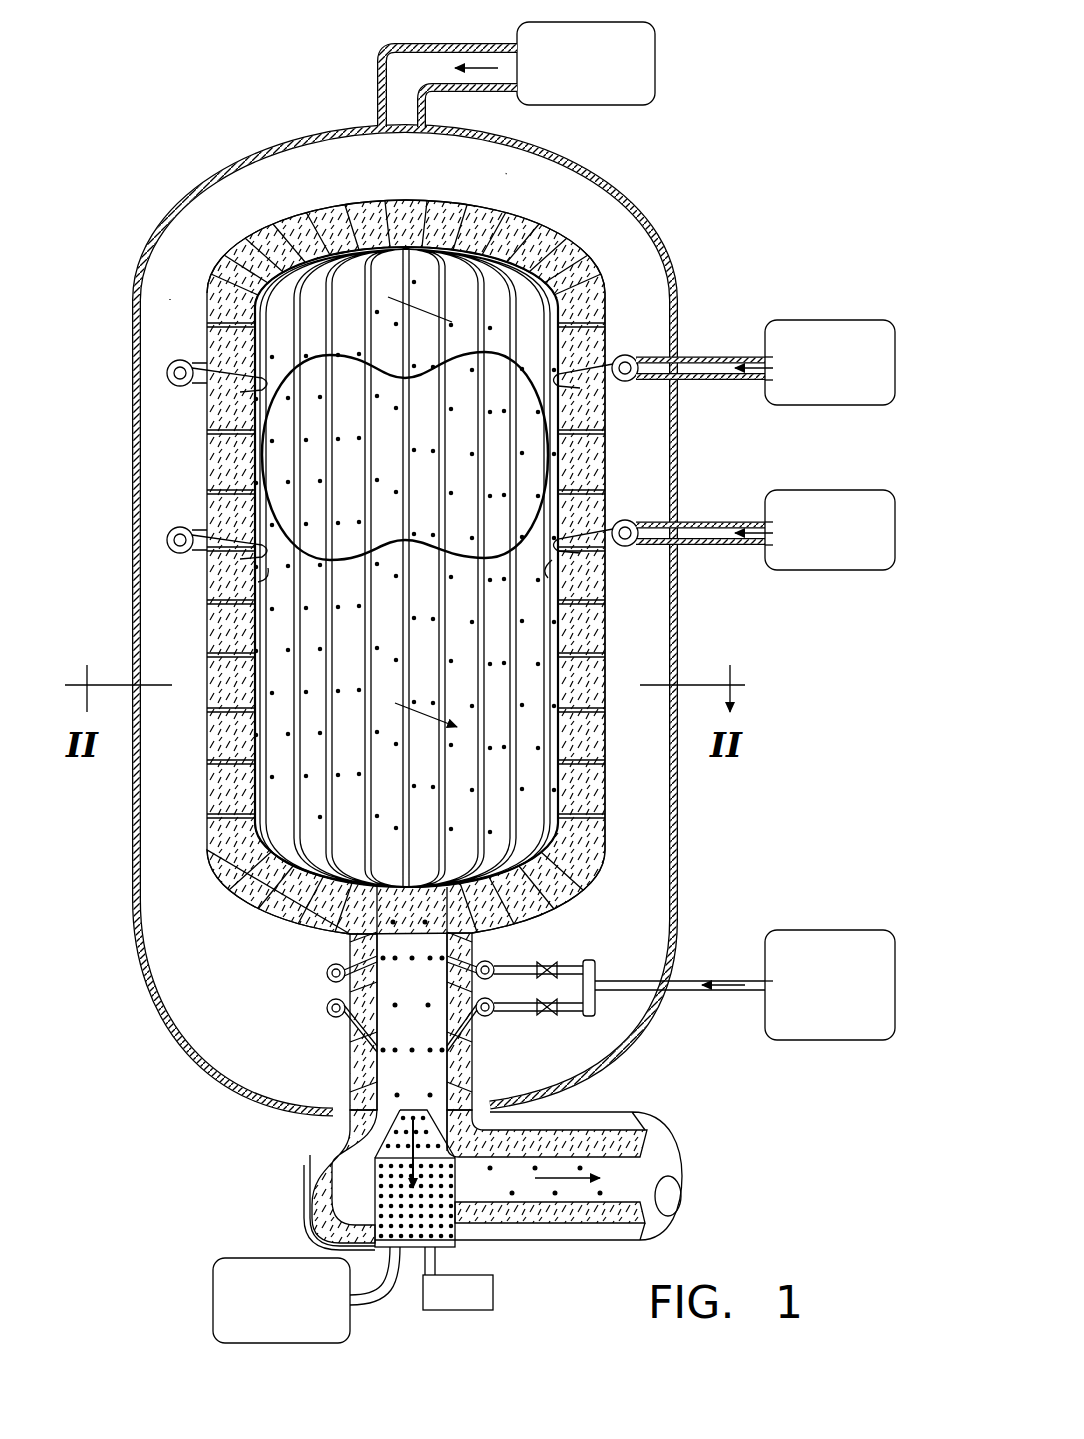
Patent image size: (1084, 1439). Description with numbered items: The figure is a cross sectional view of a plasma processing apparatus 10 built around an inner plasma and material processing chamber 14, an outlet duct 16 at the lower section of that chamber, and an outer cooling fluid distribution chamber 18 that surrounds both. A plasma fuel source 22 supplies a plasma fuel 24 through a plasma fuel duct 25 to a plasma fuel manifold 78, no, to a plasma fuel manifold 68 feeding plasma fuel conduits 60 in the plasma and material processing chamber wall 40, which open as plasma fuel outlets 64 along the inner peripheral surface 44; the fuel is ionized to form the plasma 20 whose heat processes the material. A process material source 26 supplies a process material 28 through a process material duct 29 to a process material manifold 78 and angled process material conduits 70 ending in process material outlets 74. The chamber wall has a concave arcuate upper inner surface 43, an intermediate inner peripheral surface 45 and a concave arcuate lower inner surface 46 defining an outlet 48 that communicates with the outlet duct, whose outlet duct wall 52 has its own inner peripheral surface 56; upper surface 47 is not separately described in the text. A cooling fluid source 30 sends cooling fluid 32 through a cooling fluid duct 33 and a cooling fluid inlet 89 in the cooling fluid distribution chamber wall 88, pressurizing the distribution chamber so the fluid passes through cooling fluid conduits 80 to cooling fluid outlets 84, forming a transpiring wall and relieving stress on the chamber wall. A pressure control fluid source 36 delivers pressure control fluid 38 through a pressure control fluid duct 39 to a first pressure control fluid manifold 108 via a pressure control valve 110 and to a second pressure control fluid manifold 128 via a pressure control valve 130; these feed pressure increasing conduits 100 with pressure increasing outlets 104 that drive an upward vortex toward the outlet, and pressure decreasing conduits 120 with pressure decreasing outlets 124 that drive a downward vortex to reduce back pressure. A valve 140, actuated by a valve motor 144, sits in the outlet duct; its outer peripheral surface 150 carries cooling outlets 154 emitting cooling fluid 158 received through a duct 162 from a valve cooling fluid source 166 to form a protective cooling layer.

The plasma processing apparatus 10 is at (690, 150).
The plasma and material processing chamber 14 is at (195, 330).
The outlet duct 16 is at (348, 953).
The cooling fluid distribution chamber 18 is at (138, 226).
The plasma 20 is at (428, 373).
The plasma fuel source 22 is at (832, 488).
The plasma fuel 24 is at (771, 492).
The plasma fuel duct 25 is at (705, 547).
The process material source 26 is at (830, 318).
The process material 28 is at (771, 322).
The process material duct 29 is at (705, 382).
The cooling fluid source 30 is at (657, 62).
The cooling fluid 32 is at (480, 62).
The cooling fluid duct 33 is at (378, 60).
The pressure control fluid source 36 is at (840, 930).
The pressure control fluid 38 is at (730, 992).
The pressure control fluid duct 39 is at (713, 988).
The plasma and material processing chamber wall 40 is at (207, 670).
The upper inner surface 43 is at (318, 243).
The inner peripheral surface 44 is at (262, 760).
The intermediate inner peripheral surface 45 is at (560, 627).
The lower inner surface 46 is at (282, 912).
The refractory top block 47 is at (462, 225).
The outlet 48 is at (346, 940).
The outlet duct wall 52 is at (472, 1076).
The inner peripheral surface 56 is at (473, 1108).
The plasma fuel conduits 60 is at (212, 540).
The plasma fuel outlets 64 is at (258, 582).
The plasma fuel manifold 68 is at (617, 523).
The process material conduits 70 is at (212, 372).
The process material outlets 74 is at (258, 258).
The process material manifold 78 is at (675, 355).
The cooling fluid conduits 80 is at (610, 813).
The cooling fluid outlets 84 is at (395, 663).
The cooling fluid distribution chamber wall 88 is at (236, 168).
The cooling fluid inlet 89 is at (386, 142).
The pressure increasing conduits 100 is at (474, 951).
The pressure increasing outlets 104 is at (431, 957).
The first pressure control fluid manifold 108 is at (495, 962).
The pressure control valve 110 is at (558, 962).
The pressure decreasing conduits 120 is at (473, 1028).
The pressure decreasing outlets 124 is at (431, 1049).
The second pressure control fluid manifold 128 is at (500, 992).
The pressure control valve 130 is at (550, 1011).
The valve 140 is at (458, 1196).
The valve motor 144 is at (490, 1303).
The outer peripheral surface 150 is at (375, 1172).
The cooling outlets 154 is at (345, 1200).
The cooling fluid 158 is at (382, 1290).
The duct 162 is at (393, 1289).
The valve cooling fluid source 166 is at (240, 1258).